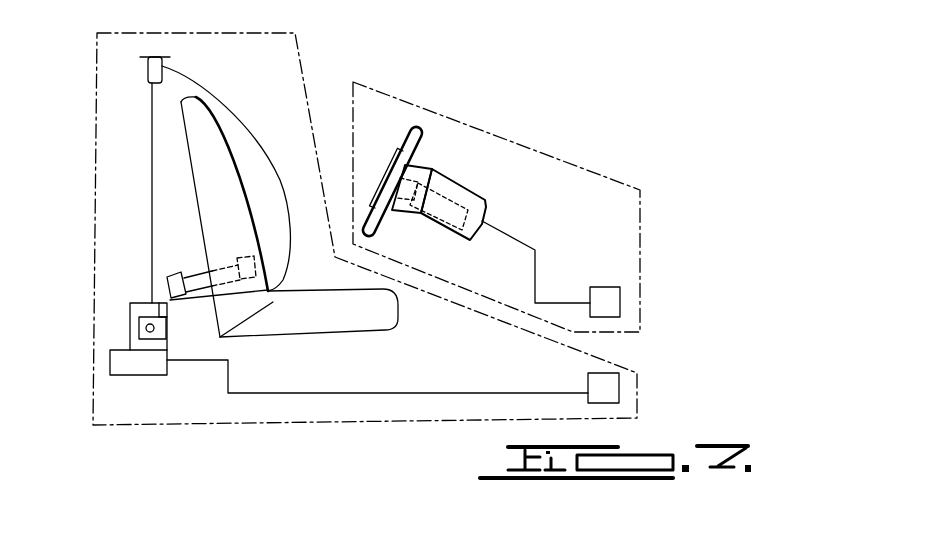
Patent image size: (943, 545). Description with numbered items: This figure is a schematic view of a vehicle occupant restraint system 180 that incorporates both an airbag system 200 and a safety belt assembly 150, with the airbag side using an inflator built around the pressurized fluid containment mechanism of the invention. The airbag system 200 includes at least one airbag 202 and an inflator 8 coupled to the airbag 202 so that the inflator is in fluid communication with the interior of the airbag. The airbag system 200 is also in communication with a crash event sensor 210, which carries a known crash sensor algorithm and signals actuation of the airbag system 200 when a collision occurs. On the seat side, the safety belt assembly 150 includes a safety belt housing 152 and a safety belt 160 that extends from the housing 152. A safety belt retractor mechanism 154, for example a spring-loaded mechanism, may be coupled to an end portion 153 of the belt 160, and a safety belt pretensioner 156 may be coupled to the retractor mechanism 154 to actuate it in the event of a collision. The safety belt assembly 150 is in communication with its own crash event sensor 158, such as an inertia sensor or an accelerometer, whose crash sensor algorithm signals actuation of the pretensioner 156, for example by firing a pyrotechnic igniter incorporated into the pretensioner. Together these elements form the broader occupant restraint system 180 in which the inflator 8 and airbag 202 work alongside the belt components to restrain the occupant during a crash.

The safety belt assembly 150 is at (307, 65).
The safety belt 160 is at (243, 115).
The end portion 153 is at (152, 297).
The safety belt retractor mechanism 154 is at (130, 310).
The safety belt housing 152 is at (163, 332).
The safety belt pretensioner 156 is at (128, 367).
The crash event sensor 158 is at (607, 393).
The vehicle occupant restraint system 180 is at (478, 82).
The airbag system 200 is at (543, 150).
The airbag 202 is at (415, 165).
The inflator 8 is at (477, 197).
The crash event sensor 210 is at (602, 295).